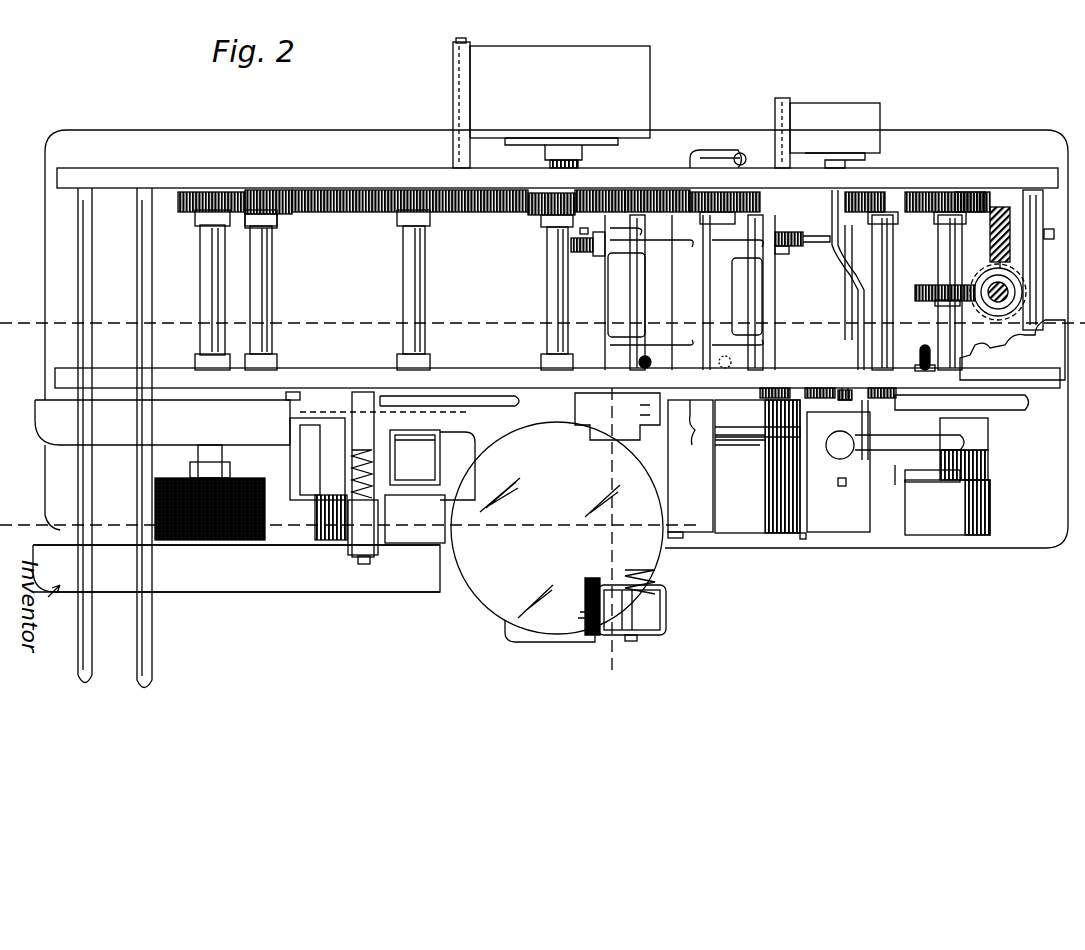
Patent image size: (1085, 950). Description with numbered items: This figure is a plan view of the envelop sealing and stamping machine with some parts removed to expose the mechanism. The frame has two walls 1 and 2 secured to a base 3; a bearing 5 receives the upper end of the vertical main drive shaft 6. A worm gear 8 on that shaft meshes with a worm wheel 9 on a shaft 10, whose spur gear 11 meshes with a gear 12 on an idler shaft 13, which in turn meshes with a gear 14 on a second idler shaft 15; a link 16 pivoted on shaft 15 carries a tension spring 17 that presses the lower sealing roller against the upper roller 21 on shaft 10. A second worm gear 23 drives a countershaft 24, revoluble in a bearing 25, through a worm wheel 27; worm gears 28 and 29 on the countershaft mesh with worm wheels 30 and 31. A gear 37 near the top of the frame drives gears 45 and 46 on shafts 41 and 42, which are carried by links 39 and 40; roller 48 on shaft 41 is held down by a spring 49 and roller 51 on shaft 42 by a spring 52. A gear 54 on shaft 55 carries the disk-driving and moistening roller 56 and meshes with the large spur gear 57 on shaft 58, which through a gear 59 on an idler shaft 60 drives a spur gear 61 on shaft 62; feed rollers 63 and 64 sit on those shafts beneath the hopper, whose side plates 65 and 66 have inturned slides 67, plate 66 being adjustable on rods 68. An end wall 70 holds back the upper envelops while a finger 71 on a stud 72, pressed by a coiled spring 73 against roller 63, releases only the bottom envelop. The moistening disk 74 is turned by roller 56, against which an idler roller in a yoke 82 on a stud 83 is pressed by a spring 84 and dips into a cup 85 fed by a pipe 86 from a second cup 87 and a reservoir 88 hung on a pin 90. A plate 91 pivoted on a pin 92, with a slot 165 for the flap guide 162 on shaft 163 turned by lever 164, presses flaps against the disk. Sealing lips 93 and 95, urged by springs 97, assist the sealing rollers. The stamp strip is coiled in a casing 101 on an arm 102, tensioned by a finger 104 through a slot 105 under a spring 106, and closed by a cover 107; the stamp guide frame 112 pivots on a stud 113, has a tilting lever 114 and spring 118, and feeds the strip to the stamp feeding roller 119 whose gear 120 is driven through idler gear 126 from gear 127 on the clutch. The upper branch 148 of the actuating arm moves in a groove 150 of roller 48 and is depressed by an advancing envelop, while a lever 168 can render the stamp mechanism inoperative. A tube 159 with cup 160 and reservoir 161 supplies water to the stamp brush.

The wall 1 is at (326, 380).
The wall 2 is at (345, 176).
The base 3 is at (296, 137).
The bearing 5 is at (52, 527).
The main drive shaft 6 is at (1000, 305).
The worm gear 8 is at (1010, 300).
The worm wheel 9 is at (992, 320).
The shaft 10 is at (962, 352).
The spur gear 11 is at (965, 192).
The gear 12 is at (895, 206).
The idler shaft 13 is at (890, 270).
The gear 14 is at (846, 205).
The second idler shaft 15 is at (854, 282).
The link 16 is at (905, 310).
The tension spring 17 is at (925, 365).
The roller 21 is at (990, 510).
The second worm gear 23 is at (1015, 285).
The countershaft 24 is at (1050, 228).
The bearing 25 is at (1022, 216).
The worm wheel 27 is at (1003, 207).
The worm gear 28 is at (790, 250).
The worm gear 29 is at (598, 252).
The worm wheel 30 is at (795, 232).
The worm wheel 31 is at (575, 246).
The gear 37 is at (690, 204).
The link 39 is at (740, 286).
The link 40 is at (652, 305).
The shaft 41 is at (764, 305).
The shaft 42 is at (620, 278).
The gear 45 is at (772, 205).
The gear 46 is at (612, 206).
The roller 48 is at (757, 530).
The spring 49 is at (722, 366).
The roller 51 is at (595, 410).
The spring 52 is at (645, 368).
The gear 54 is at (543, 216).
The shaft 55 is at (556, 278).
The disk-driving and moistening roller 56 is at (578, 635).
The large spur gear 57 is at (392, 202).
The shaft 58 is at (410, 248).
The gear 59 is at (288, 212).
The idler shaft 60 is at (272, 258).
The spur gear 61 is at (183, 205).
The shaft 62 is at (208, 242).
The feed roller 63 is at (315, 508).
The feed roller 64 is at (244, 480).
The side plate 65 is at (60, 410).
The side plate 66 is at (186, 590).
The slides 67 is at (236, 496).
The rods 68 is at (140, 640).
The end wall 70 is at (355, 432).
The finger 71 is at (396, 545).
The stud 72 is at (368, 562).
The coiled spring 73 is at (355, 470).
The moistening disk 74 is at (492, 588).
The yoke 82 is at (660, 636).
The stud 83 is at (648, 608).
The spring 84 is at (650, 580).
The cup 85 is at (526, 640).
The pipe 86 is at (578, 160).
The second cup 87 is at (592, 140).
The reservoir 88 is at (602, 52).
The pin 90 is at (470, 42).
The plate 91 is at (392, 425).
The pin 92 is at (290, 392).
The sealing lip 93 is at (705, 540).
The sealing lip 95 is at (845, 525).
The springs 97 is at (690, 466).
The cylindrical casing 101 is at (1000, 472).
The arm 102 is at (1015, 412).
The tension finger 104 is at (905, 452).
The slot 105 is at (1000, 452).
The spring 106 is at (840, 436).
The cover 107 is at (930, 482).
The frame 112 is at (896, 486).
The stud 113 is at (844, 486).
The tilting lever 114 is at (795, 418).
The spring 118 is at (848, 400).
The stamp feeding roller 119 is at (880, 434).
The spur gear wheel 120 is at (883, 384).
The idler gear 126 is at (806, 384).
The gear 127 is at (762, 384).
The branch 148 is at (782, 444).
The groove 150 is at (752, 440).
The tube 159 is at (855, 365).
The cup 160 is at (865, 158).
The replenishing reservoir 161 is at (838, 113).
The flap guide 162 is at (415, 457).
The shaft 163 is at (415, 447).
The lever 164 is at (485, 398).
The slot 165 is at (445, 458).
The lever 168 is at (722, 150).